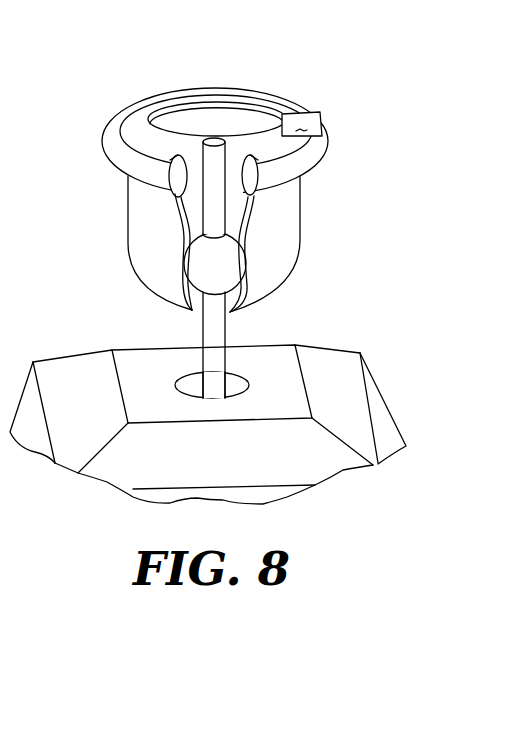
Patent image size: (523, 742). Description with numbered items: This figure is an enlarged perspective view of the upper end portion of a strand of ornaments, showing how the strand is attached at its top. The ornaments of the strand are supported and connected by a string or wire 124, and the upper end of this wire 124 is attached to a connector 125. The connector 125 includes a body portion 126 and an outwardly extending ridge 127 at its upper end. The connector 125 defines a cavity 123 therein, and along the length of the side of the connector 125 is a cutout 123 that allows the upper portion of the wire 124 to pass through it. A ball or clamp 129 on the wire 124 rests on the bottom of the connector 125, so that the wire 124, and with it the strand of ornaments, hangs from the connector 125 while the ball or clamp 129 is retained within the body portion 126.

The cavity / cutout 123 is at (190, 134).
The string or wire 124 is at (205, 333).
The connector 125 is at (226, 109).
The body portion 126 is at (300, 207).
The outwardly extending ridge 127 is at (287, 104).
The ball or clamp 129 is at (235, 270).